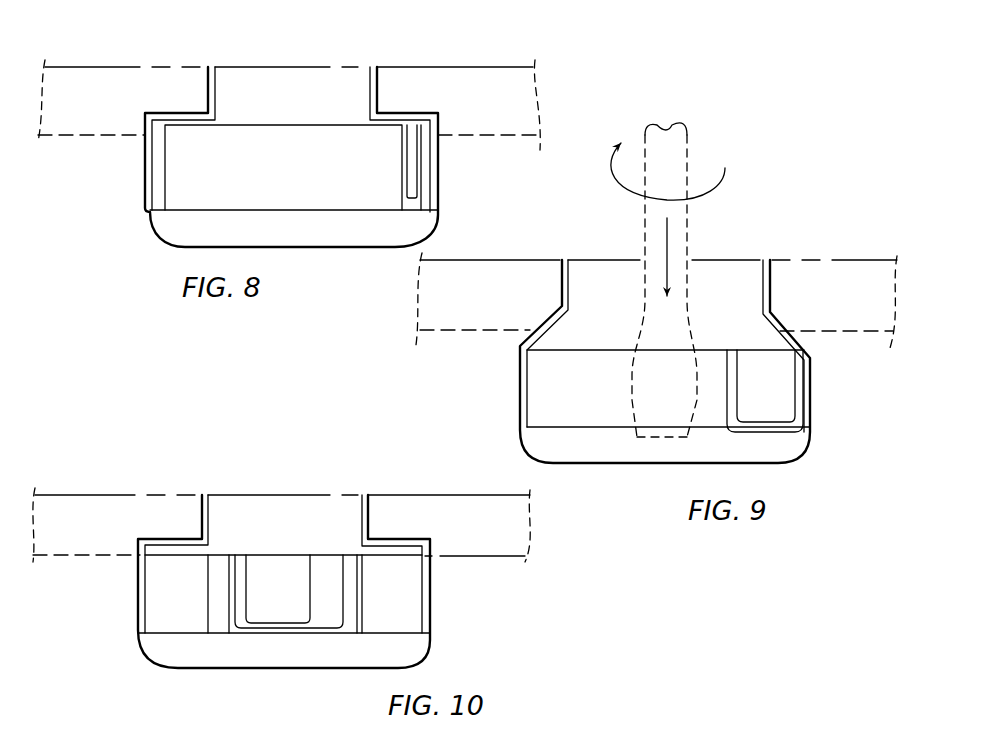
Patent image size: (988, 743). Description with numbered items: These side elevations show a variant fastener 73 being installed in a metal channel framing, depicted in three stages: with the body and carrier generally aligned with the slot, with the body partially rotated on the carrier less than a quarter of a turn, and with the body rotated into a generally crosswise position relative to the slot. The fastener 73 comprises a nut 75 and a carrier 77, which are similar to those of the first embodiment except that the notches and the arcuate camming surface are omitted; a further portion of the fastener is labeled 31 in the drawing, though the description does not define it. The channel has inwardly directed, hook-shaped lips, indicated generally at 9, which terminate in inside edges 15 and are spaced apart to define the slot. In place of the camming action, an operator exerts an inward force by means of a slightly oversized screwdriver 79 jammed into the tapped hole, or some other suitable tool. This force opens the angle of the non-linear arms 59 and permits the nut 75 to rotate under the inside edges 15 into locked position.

In FIG. 8, the inwardly directed lips region 9 is at (543, 106).
In FIG. 9, the inwardly directed lips region 9 is at (413, 292).
In FIG. 10, the inwardly directed lips region 9 is at (525, 533).
In FIG. 8, the inside edges 15 is at (100, 146).
In FIG. 9, the inside edges 15 is at (483, 329).
In FIG. 10, the inside edges 15 is at (86, 554).
In FIG. 8, the housing top wall 31 is at (252, 125).
In FIG. 9, the housing top wall 31 is at (585, 349).
In FIG. 10, the housing top wall 31 is at (225, 555).
In FIG. 8, the non-linear arms 59 is at (167, 111).
In FIG. 9, the non-linear arms 59 is at (539, 318).
In FIG. 10, the non-linear arms 59 is at (169, 535).
In FIG. 8, the fastener 73 is at (378, 68).
In FIG. 9, the fastener 73 is at (776, 260).
In FIG. 10, the fastener 73 is at (367, 491).
In FIG. 8, the nut 75 is at (303, 110).
In FIG. 9, the nut 75 is at (720, 347).
In FIG. 10, the nut 75 is at (247, 551).
In FIG. 8, the carrier 77 is at (140, 199).
In FIG. 9, the carrier 77 is at (512, 405).
In FIG. 10, the carrier 77 is at (129, 612).
In FIG. 9, the screwdriver 79 is at (695, 151).